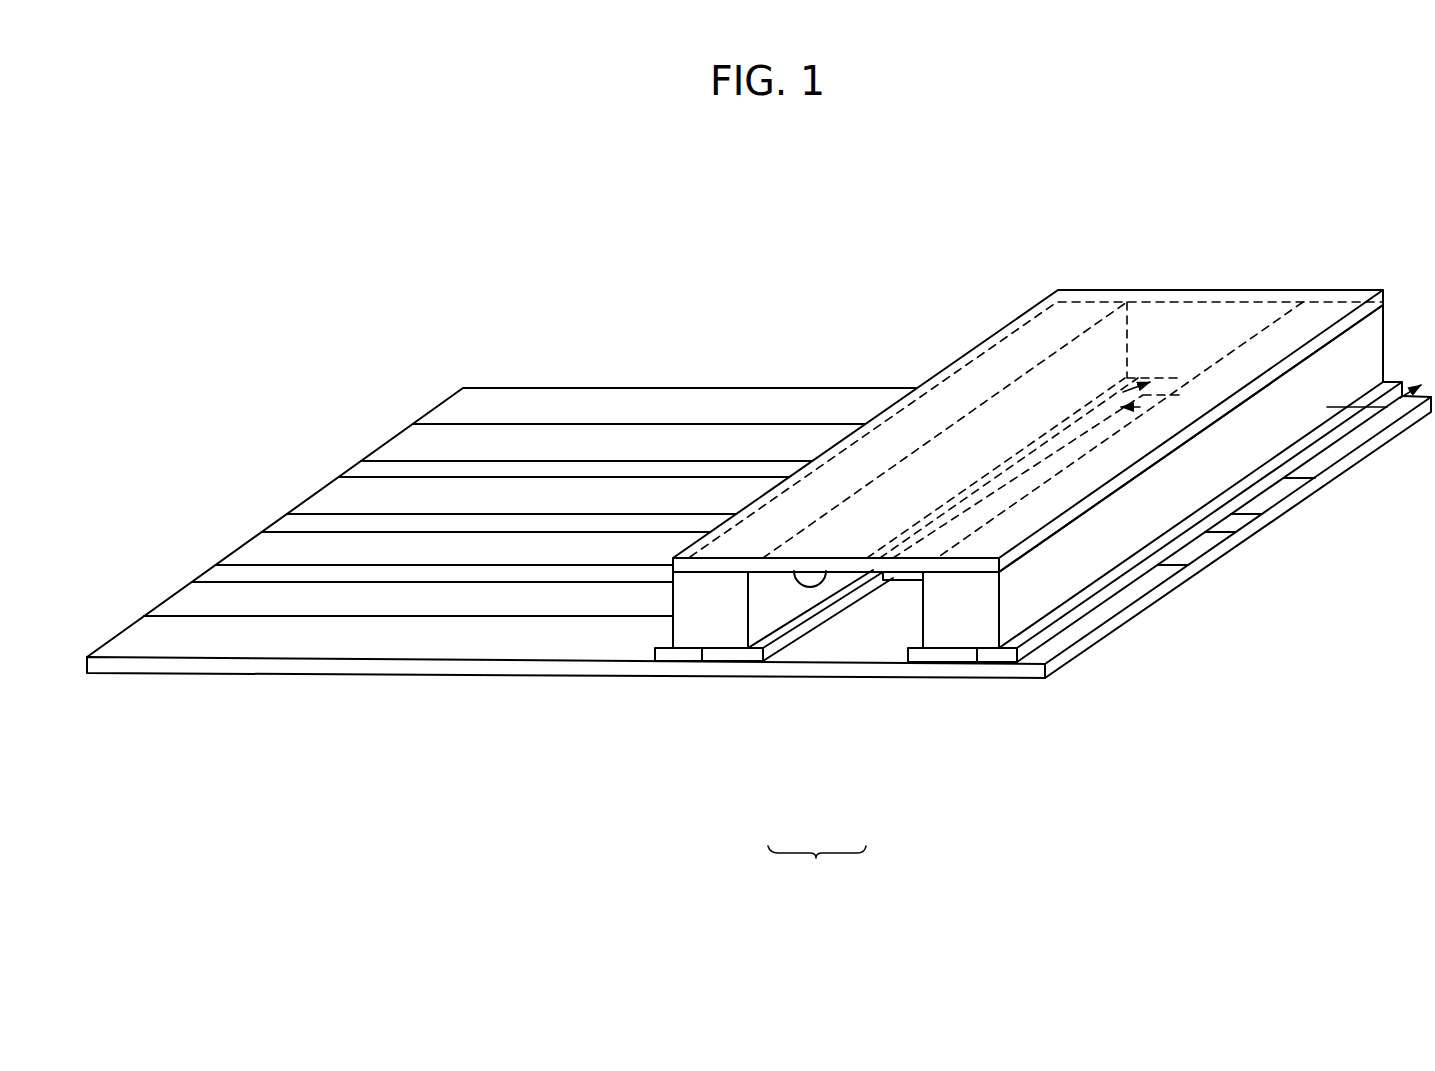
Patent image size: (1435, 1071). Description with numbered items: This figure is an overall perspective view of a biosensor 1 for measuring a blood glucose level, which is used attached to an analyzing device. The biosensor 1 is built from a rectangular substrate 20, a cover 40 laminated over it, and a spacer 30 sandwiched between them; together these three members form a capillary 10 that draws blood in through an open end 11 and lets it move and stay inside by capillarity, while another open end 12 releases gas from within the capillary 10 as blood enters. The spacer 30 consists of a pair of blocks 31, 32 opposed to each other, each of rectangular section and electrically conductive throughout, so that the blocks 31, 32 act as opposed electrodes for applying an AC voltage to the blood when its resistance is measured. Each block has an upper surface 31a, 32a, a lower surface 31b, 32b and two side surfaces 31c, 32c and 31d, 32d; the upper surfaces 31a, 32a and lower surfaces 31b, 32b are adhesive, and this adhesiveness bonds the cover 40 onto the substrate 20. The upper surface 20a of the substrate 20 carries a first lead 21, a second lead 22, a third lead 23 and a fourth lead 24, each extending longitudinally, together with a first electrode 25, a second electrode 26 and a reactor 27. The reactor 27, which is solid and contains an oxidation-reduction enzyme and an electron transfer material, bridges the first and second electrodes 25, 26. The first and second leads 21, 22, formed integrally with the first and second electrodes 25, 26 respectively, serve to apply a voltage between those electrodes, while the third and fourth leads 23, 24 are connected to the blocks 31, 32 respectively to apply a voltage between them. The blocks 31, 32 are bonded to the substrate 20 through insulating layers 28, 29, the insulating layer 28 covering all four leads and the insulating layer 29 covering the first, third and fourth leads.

The biosensor 1 is at (880, 292).
The capillary 10 is at (1239, 322).
The open end 11 is at (1133, 338).
The another open end 12 is at (827, 571).
The substrate 20 is at (552, 679).
The upper surface 20a is at (417, 645).
The first lead 21 is at (612, 550).
The second lead 22 is at (697, 490).
The third lead 23 is at (513, 603).
The fourth lead 24 is at (780, 445).
The first electrode 25 is at (1196, 553).
The second electrode 26 is at (1264, 504).
The reactor 27 is at (895, 581).
The insulating layer 28 is at (667, 657).
The insulating layer 29 is at (1117, 574).
The spacer 30 is at (817, 869).
The block 31 is at (717, 630).
The upper surface 31a is at (708, 572).
The lower surface 31b is at (702, 661).
The side surface 31c is at (748, 605).
The side surface 31d is at (670, 602).
The block 32 is at (970, 630).
The upper surface 32a is at (982, 572).
The lower surface 32b is at (983, 663).
The side surface 32c is at (922, 605).
The side surface 32d is at (1067, 578).
The cover 40 is at (1362, 285).